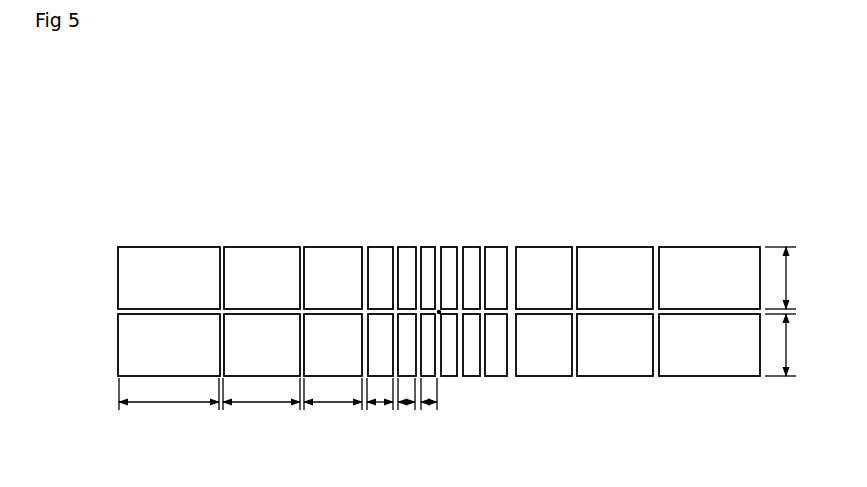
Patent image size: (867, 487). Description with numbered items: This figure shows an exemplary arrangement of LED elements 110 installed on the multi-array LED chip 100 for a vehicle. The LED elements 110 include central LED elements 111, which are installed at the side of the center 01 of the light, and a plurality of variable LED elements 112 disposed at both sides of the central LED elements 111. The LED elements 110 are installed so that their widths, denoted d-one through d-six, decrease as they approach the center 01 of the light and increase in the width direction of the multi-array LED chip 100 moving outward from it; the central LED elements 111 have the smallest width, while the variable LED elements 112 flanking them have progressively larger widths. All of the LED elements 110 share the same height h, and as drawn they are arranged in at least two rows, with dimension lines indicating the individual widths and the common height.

The multi-array LED chip for a vehicle 100 is at (177, 146).
The LED elements 110 is at (592, 157).
The central LED elements 111 is at (452, 260).
The variable LED elements 112 is at (408, 263).
The center of the light 01 is at (439, 312).